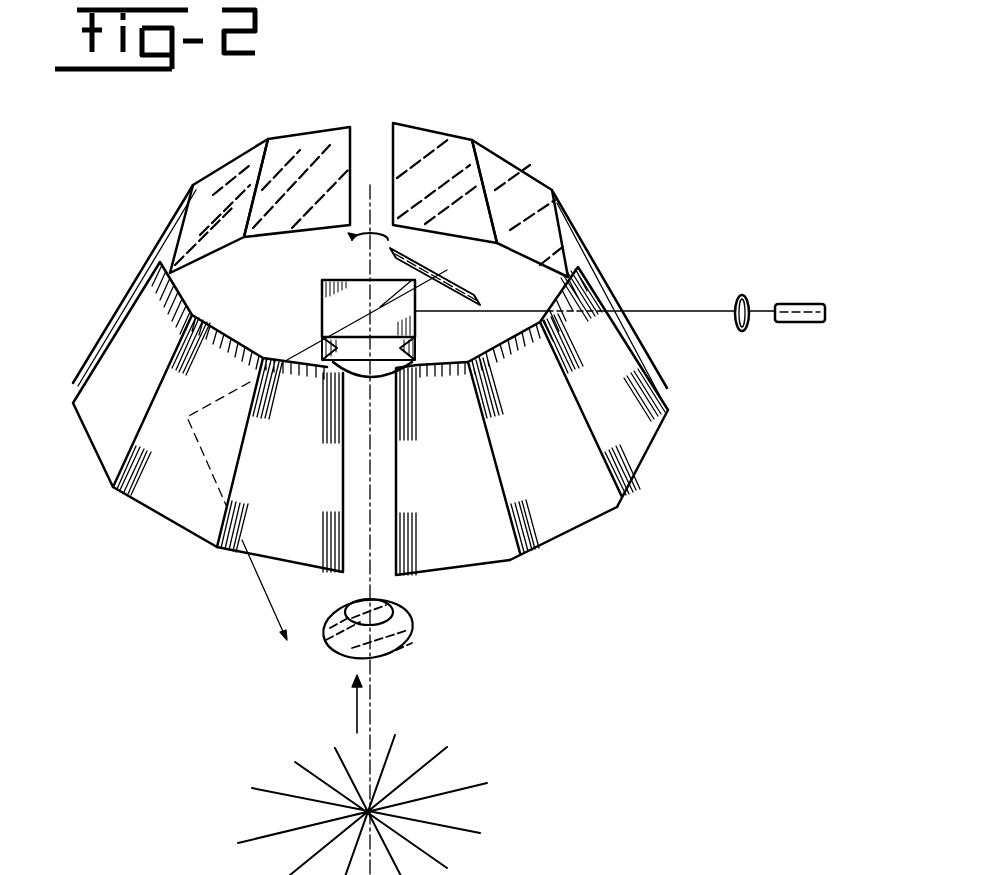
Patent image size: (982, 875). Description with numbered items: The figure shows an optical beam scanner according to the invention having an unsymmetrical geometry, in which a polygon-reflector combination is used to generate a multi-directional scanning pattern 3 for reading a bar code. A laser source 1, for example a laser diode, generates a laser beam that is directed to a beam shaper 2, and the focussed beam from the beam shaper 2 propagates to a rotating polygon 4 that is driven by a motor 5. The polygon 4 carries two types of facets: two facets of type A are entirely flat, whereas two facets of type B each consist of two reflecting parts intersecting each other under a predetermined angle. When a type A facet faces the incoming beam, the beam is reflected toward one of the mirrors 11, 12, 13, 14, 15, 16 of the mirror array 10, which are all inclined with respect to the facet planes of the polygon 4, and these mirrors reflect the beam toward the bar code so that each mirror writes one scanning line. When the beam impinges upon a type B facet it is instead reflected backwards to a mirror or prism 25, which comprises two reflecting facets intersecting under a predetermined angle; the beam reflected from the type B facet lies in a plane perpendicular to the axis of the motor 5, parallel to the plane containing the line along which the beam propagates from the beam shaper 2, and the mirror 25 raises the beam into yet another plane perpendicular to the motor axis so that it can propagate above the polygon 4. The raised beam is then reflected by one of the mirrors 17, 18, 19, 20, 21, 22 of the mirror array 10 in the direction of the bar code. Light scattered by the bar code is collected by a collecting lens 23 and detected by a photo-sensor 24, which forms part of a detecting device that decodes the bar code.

The laser source 1 is at (798, 304).
The beam shaper 2 is at (745, 300).
The multi-directional scanning pattern 3 is at (468, 833).
The rotating polygon 4 is at (350, 280).
The motor 5 is at (367, 383).
The mirror array 10 is at (387, 81).
The mirror 11 is at (428, 148).
The mirror 12 is at (523, 175).
The mirror 13 is at (590, 252).
The mirror 14 is at (632, 458).
The mirror 15 is at (560, 525).
The mirror 16 is at (463, 553).
The mirror 17 is at (290, 543).
The mirror 18 is at (165, 510).
The mirror 19 is at (97, 447).
The mirror 20 is at (157, 247).
The mirror 21 is at (230, 167).
The mirror 22 is at (300, 150).
The collecting lens 23 is at (402, 643).
The photo-sensor 24 is at (387, 610).
The mirror or prism 25 is at (473, 292).